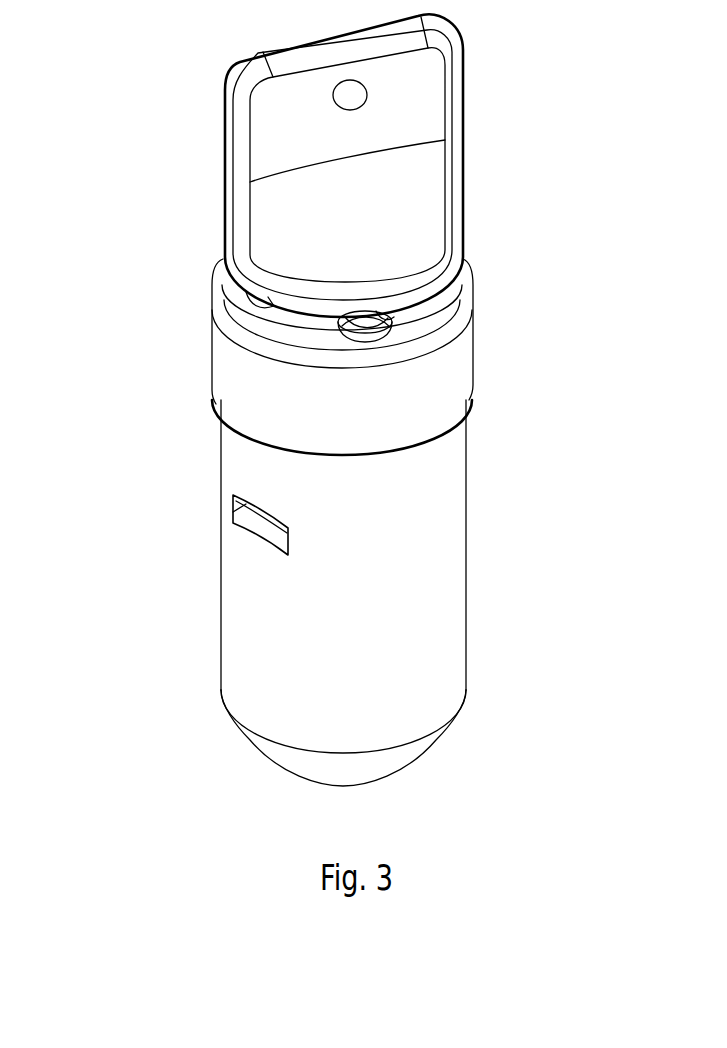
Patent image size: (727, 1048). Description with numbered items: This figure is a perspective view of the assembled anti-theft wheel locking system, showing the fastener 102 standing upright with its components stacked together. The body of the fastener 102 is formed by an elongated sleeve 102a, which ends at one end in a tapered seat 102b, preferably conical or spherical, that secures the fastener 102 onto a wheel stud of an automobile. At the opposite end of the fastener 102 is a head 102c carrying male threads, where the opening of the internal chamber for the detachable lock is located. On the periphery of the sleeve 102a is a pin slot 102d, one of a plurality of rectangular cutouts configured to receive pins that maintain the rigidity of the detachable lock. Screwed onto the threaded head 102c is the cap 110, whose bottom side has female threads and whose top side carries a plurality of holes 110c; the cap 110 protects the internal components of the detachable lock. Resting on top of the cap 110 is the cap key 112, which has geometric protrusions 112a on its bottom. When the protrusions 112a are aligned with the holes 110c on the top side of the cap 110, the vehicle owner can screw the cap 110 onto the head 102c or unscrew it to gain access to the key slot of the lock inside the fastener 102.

The fastener 102 is at (333, 590).
The elongated sleeve 102a is at (290, 620).
The seat 102b is at (290, 762).
The head 102c is at (258, 440).
The pin slots 102d is at (255, 528).
The cap 110 is at (255, 337).
The holes 110c is at (247, 300).
The cap key 112 is at (290, 185).
The geometric protrusions 112a is at (382, 315).